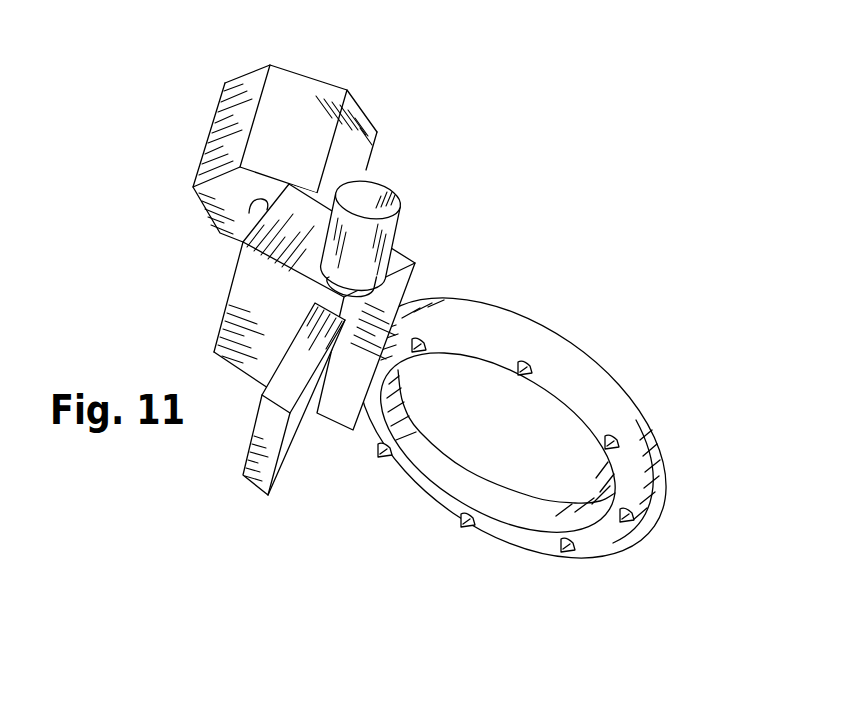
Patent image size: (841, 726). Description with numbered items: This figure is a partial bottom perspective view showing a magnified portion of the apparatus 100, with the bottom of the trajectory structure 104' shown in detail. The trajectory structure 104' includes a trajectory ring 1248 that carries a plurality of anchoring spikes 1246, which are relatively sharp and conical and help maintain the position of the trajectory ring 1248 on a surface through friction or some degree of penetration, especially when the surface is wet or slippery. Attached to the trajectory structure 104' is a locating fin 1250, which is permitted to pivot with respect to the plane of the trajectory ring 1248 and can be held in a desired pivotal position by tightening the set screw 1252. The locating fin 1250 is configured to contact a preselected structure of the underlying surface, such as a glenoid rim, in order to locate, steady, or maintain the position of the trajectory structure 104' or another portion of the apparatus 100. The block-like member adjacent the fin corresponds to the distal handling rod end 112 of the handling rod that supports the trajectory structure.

The apparatus 100 is at (306, 291).
The distal handling rod end 112 is at (400, 126).
The set screw 1252 is at (383, 238).
The trajectory ring 1248 is at (618, 392).
The locating fin 1250 is at (243, 477).
The trajectory structure 104' is at (512, 444).
The anchoring spikes 1246 is at (470, 528).